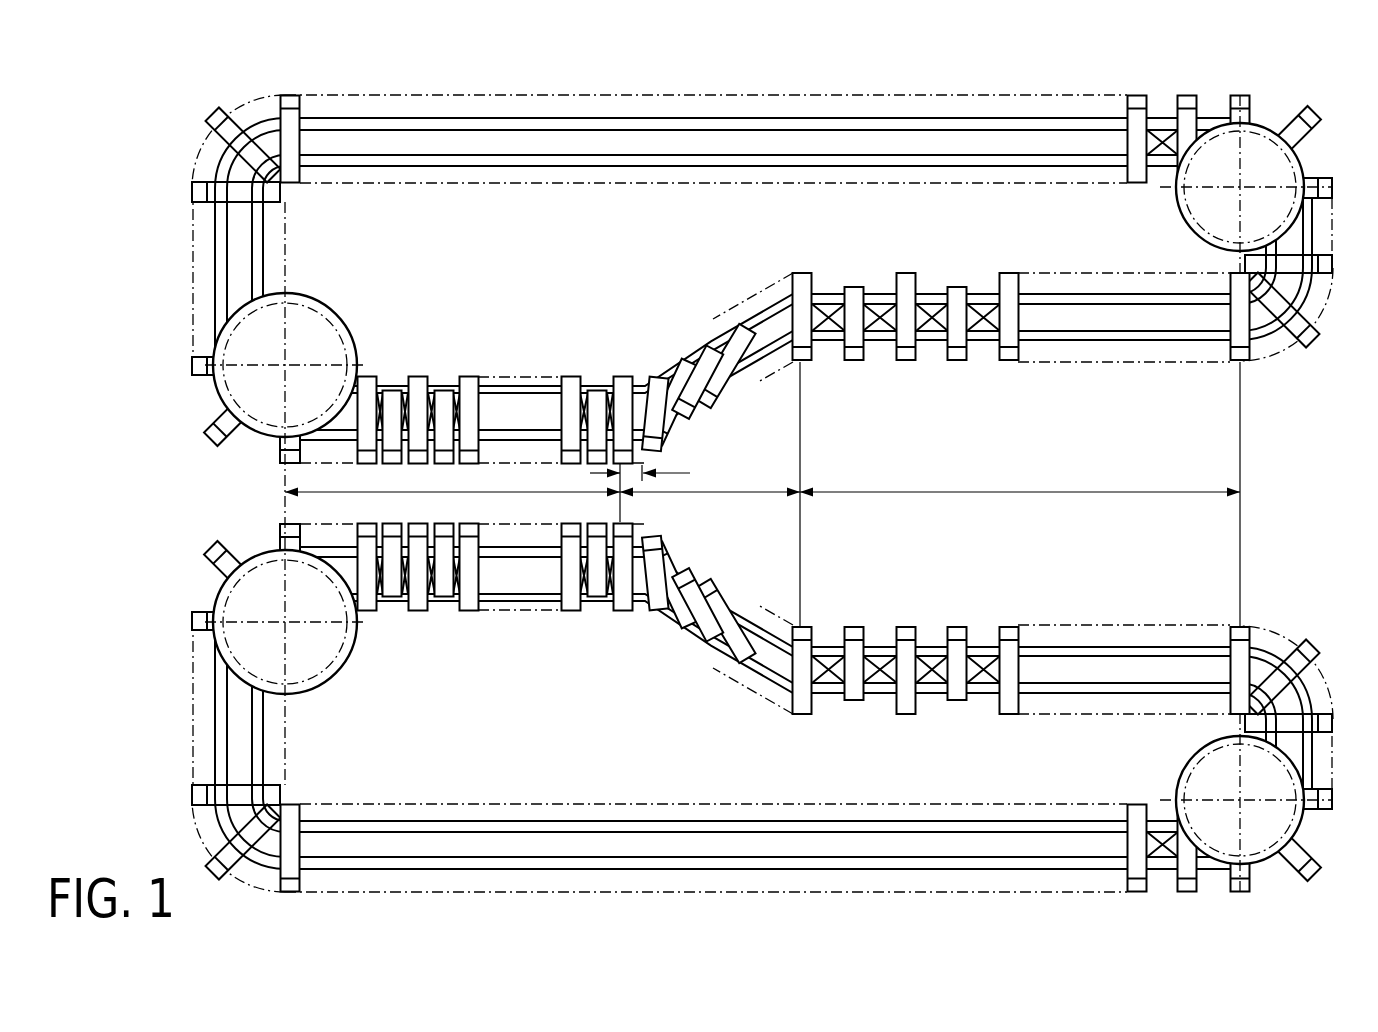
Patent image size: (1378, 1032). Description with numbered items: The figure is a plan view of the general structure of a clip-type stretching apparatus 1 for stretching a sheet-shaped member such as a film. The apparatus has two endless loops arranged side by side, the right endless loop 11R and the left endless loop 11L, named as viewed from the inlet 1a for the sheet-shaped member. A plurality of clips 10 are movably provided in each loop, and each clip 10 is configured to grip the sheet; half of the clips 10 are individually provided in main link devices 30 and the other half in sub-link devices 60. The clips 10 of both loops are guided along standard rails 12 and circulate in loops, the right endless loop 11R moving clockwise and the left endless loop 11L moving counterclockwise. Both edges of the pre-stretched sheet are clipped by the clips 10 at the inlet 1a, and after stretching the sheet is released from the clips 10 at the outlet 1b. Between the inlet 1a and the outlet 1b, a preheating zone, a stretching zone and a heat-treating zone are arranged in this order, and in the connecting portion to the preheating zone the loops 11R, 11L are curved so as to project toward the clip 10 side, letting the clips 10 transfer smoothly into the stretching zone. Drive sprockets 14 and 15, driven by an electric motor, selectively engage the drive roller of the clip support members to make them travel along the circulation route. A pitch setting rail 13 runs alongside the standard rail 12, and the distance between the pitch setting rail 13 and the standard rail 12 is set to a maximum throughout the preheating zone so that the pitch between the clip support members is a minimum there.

The clip-type stretching apparatus 1 is at (757, 474).
The inlet 1a is at (239, 493).
The outlet 1b is at (1285, 488).
The clip 10 is at (1010, 362).
The left endless loop 11L is at (972, 82).
The right endless loop 11R is at (947, 895).
The standard rail 12 is at (1138, 343).
The pitch setting rail 13 is at (1088, 290).
The drive sprocket 14 is at (318, 325).
The drive sprocket 15 is at (1257, 142).
The main link device 30 is at (803, 262).
The sub-link device 60 is at (855, 273).